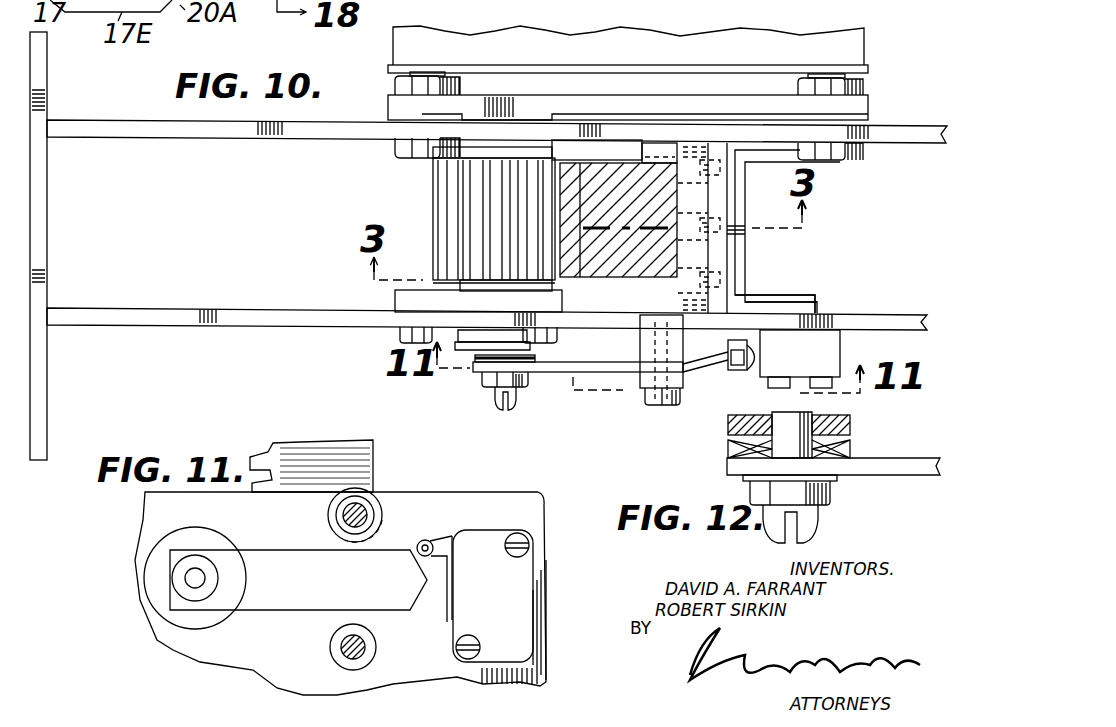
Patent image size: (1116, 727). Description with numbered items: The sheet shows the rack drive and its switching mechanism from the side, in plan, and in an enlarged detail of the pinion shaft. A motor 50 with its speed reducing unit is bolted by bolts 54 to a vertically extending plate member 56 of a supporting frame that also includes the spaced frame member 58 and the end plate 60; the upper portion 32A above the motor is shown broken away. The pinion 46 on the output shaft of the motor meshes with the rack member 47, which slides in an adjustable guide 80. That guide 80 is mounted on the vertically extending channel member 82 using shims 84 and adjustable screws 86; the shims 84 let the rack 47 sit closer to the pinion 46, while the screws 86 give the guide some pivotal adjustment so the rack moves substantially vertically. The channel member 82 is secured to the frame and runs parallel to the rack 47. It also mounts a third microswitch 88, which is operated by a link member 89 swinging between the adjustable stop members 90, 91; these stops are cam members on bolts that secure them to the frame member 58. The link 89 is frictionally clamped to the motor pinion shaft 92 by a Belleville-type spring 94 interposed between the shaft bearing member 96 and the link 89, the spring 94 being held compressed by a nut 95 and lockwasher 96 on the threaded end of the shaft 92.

In FIG. 10, the end plate 60 is at (46, 228).
In FIG. 10, the vertically extending plate member 56 is at (256, 140).
In FIG. 10, the frame member 58 is at (255, 315).
In FIG. 11, the frame member 58 is at (158, 523).
In FIG. 10, the motor 50 is at (788, 45).
In FIG. 10, the plate section 32A is at (628, 36).
In FIG. 10, the adjustable guide 80 is at (663, 147).
In FIG. 10, the bolts 54 is at (390, 153).
In FIG. 10, the shaft bearing member 96 is at (407, 302).
In FIG. 12, the shaft bearing member 96 is at (740, 425).
In FIG. 10, the pinion 46 is at (458, 190).
In FIG. 10, the rack member 47 is at (617, 272).
In FIG. 11, the rack member 47 is at (320, 450).
In FIG. 10, the adjustable screws 86 is at (713, 147).
In FIG. 10, the shims 84 is at (715, 197).
In FIG. 10, the channel member 82 is at (735, 287).
In FIG. 10, the Belleville-type spring 94 is at (535, 357).
In FIG. 11, the Belleville-type spring 94 is at (222, 541).
In FIG. 12, the Belleville-type spring 94 is at (812, 450).
In FIG. 10, the link member 89 is at (558, 372).
In FIG. 11, the link member 89 is at (312, 600).
In FIG. 12, the link member 89 is at (913, 470).
In FIG. 10, the nut 95 is at (497, 393).
In FIG. 12, the nut 95 is at (810, 525).
In FIG. 10, the adjustable stop member 90 is at (660, 380).
In FIG. 11, the adjustable stop member 90 is at (360, 512).
In FIG. 11, the adjustable stop member 91 is at (373, 645).
In FIG. 11, the motor pinion shaft 92 is at (190, 582).
In FIG. 12, the motor pinion shaft 92 is at (790, 428).
In FIG. 10, the microswitch 88 is at (813, 352).
In FIG. 11, the microswitch 88 is at (515, 610).